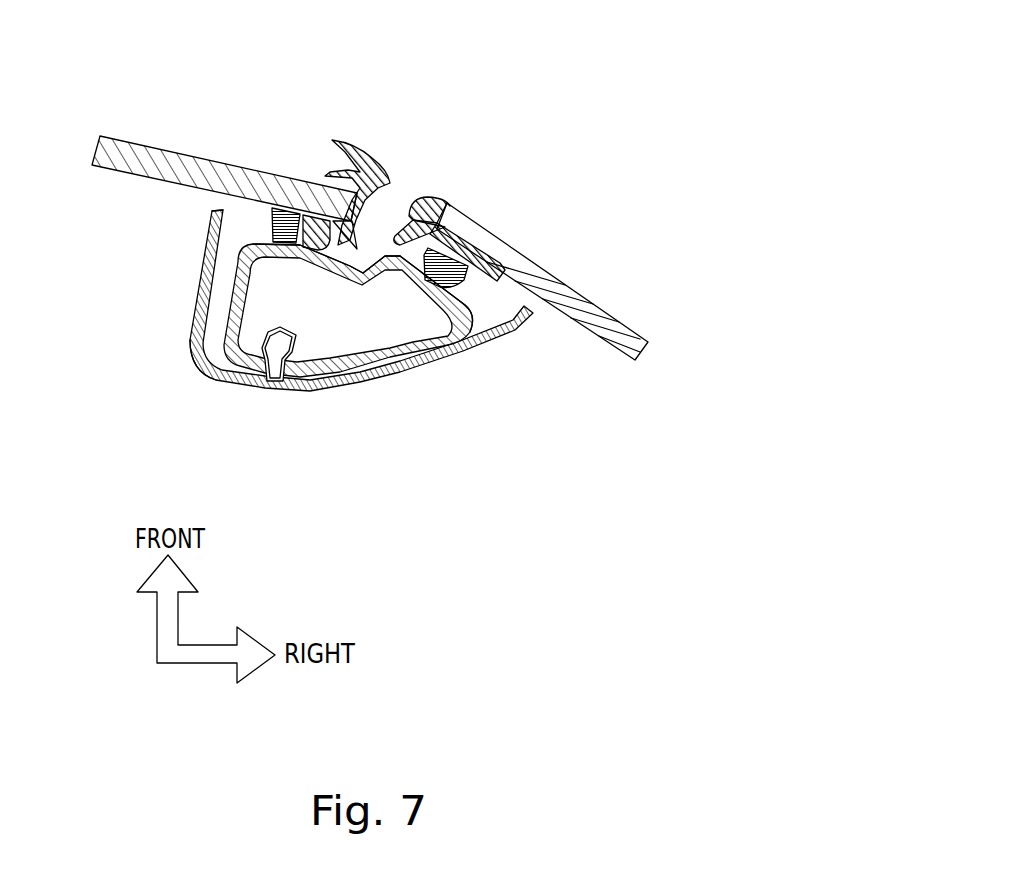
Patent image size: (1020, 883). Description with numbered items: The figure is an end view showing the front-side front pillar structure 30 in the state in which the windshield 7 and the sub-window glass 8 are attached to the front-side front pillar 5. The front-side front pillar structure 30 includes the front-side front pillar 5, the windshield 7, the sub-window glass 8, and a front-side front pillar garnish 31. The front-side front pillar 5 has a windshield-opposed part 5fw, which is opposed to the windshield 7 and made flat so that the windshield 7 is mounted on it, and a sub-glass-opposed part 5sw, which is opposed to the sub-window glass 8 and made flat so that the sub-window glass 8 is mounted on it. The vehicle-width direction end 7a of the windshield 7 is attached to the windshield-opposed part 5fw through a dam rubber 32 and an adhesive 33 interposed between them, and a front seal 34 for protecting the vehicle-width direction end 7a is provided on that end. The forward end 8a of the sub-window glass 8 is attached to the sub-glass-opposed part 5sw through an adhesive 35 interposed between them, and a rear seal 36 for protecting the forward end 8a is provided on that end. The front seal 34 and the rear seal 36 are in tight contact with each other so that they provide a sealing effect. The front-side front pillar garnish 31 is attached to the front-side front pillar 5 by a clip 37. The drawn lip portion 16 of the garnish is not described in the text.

The front-side front pillar 5 is at (368, 393).
The windshield-opposed part 5fw is at (327, 273).
The sub-glass-opposed part 5sw is at (423, 288).
The windshield 7 is at (197, 162).
The vehicle-width direction end 7a is at (300, 192).
The sub-window glass 8 is at (566, 293).
The forward end 8a is at (487, 236).
The lip portion 16 is at (222, 293).
The front-side front pillar structure 30 is at (612, 111).
The front-side front pillar garnish 31 is at (203, 373).
The dam rubber 32 is at (267, 230).
The adhesive 33 is at (315, 262).
The front seal 34 is at (380, 167).
The adhesive 35 is at (458, 283).
The rear seal 36 is at (428, 200).
The clip 37 is at (277, 345).